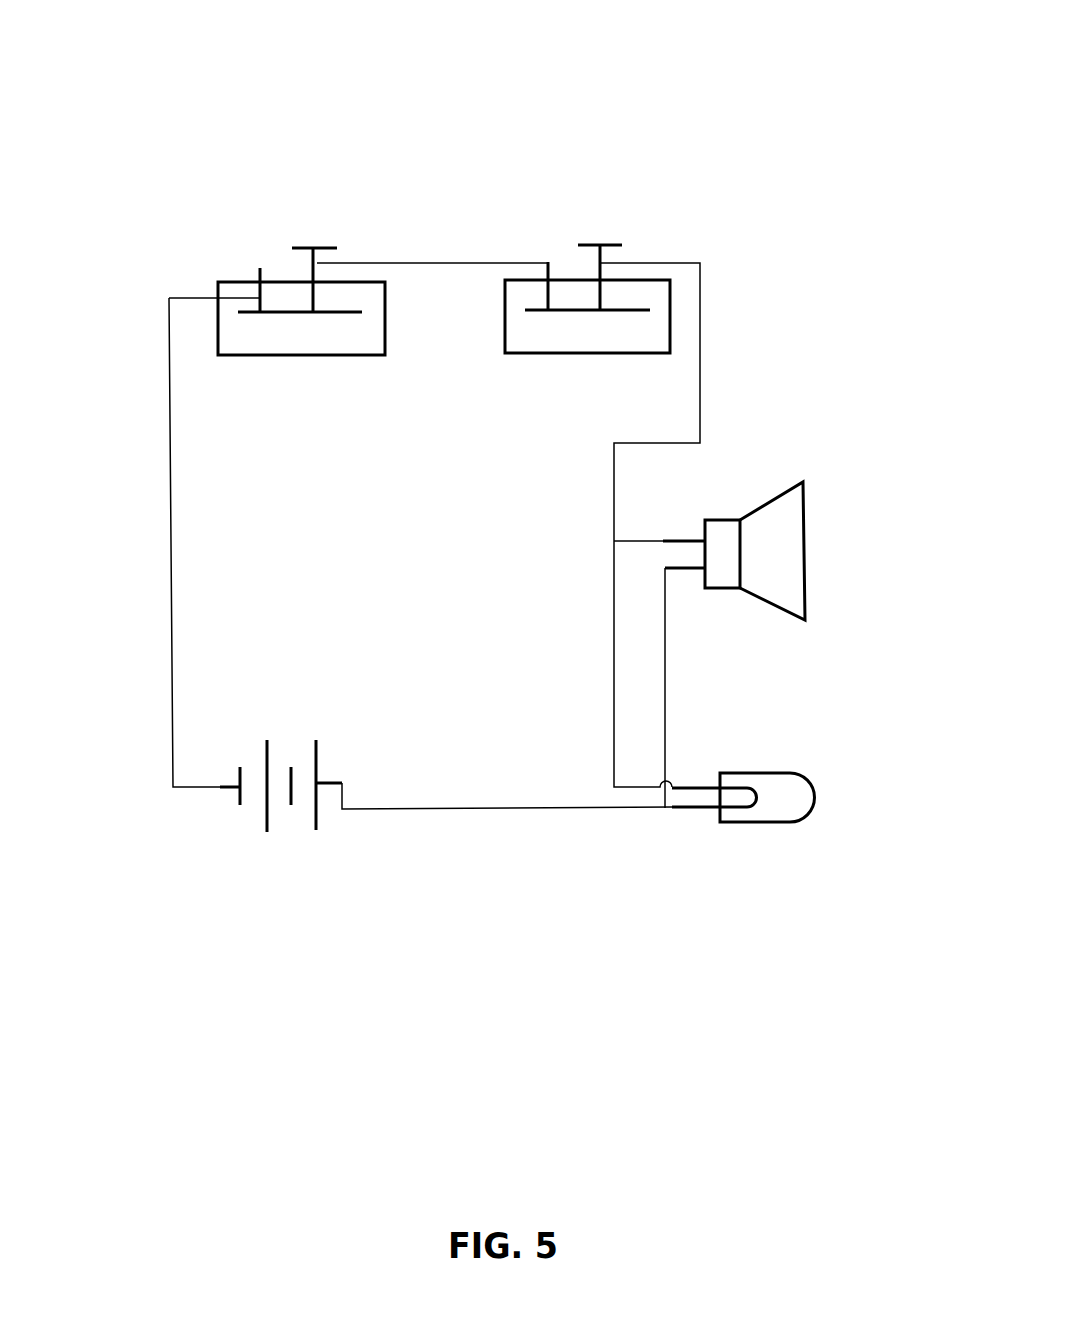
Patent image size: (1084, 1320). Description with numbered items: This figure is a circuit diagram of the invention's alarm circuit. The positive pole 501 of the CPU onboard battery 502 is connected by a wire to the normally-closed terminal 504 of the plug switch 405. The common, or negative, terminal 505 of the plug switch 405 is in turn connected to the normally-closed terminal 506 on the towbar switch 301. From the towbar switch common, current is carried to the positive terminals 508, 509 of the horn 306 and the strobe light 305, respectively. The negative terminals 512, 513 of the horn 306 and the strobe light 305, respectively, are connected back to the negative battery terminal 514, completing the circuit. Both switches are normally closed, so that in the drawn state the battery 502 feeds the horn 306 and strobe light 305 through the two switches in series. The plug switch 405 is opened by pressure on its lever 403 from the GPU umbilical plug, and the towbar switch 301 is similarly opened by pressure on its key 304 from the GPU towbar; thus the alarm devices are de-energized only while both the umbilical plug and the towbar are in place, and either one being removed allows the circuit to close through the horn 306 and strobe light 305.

The towbar switch 301 is at (632, 296).
The key 304 is at (605, 227).
The strobe light 305 is at (778, 798).
The horn 306 is at (780, 545).
The lever 403 is at (300, 247).
The plug switch 405 is at (353, 296).
The positive pole 501 is at (210, 808).
The CPU onboard battery 502 is at (267, 832).
The normally-closed terminal 504 is at (243, 237).
The common terminal 505 is at (310, 227).
The normally-closed terminal 506 is at (548, 245).
The positive terminal 508 is at (682, 518).
The positive terminal 509 is at (688, 767).
The negative terminal 512 is at (683, 588).
The negative terminal 513 is at (682, 823).
The negative battery terminal 514 is at (378, 850).